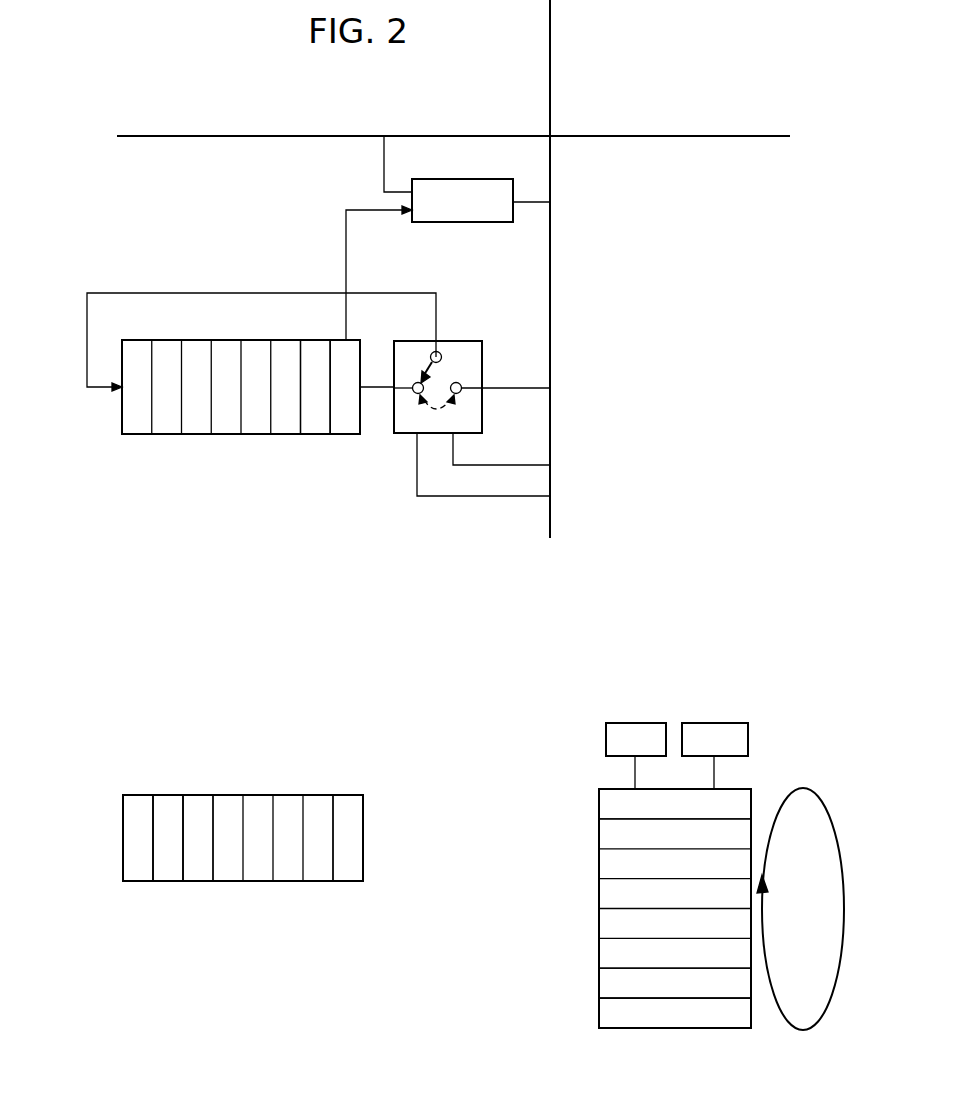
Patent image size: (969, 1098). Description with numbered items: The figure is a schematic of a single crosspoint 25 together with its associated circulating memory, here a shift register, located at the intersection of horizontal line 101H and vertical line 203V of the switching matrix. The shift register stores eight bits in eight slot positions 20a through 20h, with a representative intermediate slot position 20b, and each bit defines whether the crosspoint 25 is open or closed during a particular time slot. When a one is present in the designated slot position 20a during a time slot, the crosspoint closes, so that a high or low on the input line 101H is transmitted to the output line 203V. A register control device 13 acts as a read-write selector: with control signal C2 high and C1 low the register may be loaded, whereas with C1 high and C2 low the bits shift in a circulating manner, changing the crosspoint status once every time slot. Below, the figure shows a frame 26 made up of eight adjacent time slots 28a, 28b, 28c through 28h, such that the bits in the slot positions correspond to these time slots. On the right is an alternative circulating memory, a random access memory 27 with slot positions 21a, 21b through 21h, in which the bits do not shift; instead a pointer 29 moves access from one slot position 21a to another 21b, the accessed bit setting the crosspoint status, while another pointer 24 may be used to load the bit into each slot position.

The horizontal line 101H is at (188, 136).
The vertical line 203V is at (550, 528).
The crosspoint 25 is at (467, 187).
The register control device 13 is at (467, 341).
The slot position 20a is at (349, 428).
The slot position 20b is at (320, 427).
The slot position 20h is at (143, 427).
The control signal C1 is at (526, 460).
The control signal C2 is at (490, 498).
The frame 26 is at (360, 933).
The time slot 28a is at (141, 877).
The time slot 28b is at (172, 877).
The time slot 28c is at (198, 877).
The time slot 28h is at (348, 877).
The random access memory 27 is at (532, 844).
The slot position 21a is at (606, 1013).
The slot position 21b is at (608, 983).
The slot position 21h is at (599, 807).
The pointer 24 is at (606, 740).
The pointer 29 is at (748, 743).